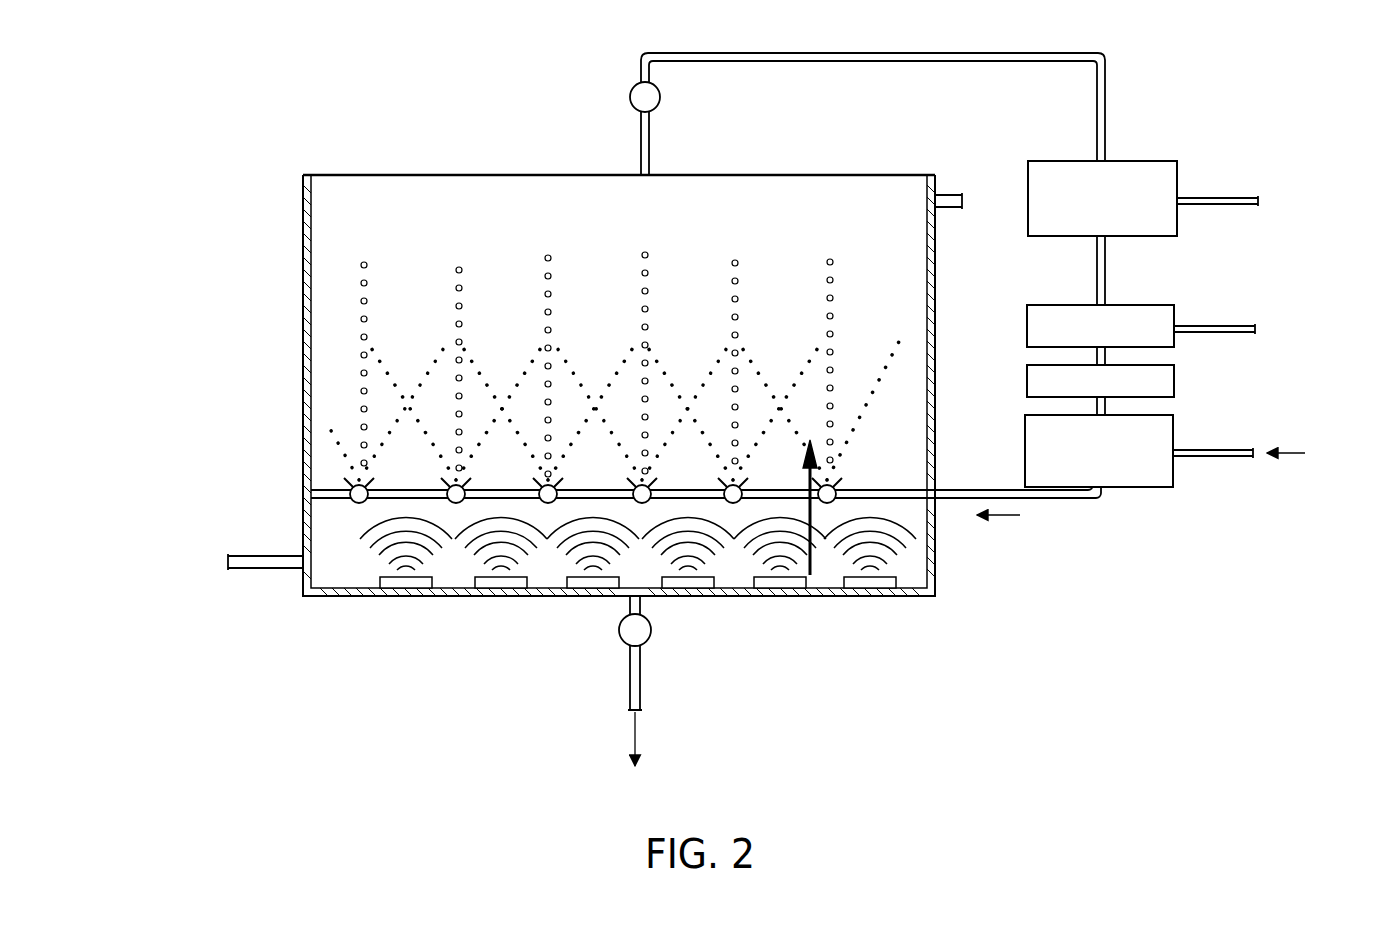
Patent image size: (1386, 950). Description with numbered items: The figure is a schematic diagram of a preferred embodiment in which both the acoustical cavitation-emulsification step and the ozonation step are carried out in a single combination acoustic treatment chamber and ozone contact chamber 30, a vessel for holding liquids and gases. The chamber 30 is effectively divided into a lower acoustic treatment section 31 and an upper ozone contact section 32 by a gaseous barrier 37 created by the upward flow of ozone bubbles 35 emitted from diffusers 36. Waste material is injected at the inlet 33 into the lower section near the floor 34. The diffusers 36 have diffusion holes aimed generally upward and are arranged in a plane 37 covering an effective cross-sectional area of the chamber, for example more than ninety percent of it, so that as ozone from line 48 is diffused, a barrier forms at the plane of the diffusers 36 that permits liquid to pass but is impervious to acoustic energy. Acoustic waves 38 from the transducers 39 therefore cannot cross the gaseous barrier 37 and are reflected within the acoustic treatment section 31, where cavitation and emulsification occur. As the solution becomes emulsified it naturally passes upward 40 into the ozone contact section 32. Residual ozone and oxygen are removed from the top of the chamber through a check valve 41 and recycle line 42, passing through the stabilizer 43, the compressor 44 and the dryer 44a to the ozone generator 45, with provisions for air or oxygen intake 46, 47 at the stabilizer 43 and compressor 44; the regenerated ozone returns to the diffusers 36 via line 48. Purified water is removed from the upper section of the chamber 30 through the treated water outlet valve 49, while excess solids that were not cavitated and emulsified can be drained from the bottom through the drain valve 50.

The combination acoustic treatment chamber and ozone contact chamber 30 is at (340, 168).
The acoustic treatment section 31 is at (546, 639).
The ozone contact section 32 is at (530, 301).
The inlet 33 is at (208, 561).
The floor 34 is at (530, 597).
The ozone bubbles 35 is at (530, 366).
The diffusers 36 is at (552, 486).
The gaseous barrier 37 is at (345, 503).
The acoustic waves 38 is at (390, 548).
The transducers 39 is at (735, 572).
The upward flow of liquid 40 is at (818, 470).
The check valve 41 is at (660, 95).
The recycle line 42 is at (873, 101).
The stabilizer 43 is at (1180, 145).
The compressor 44 is at (1160, 305).
The dryer 44a is at (1176, 380).
The ozone generator 45 is at (1175, 415).
The air or oxygen intake 46 is at (1305, 201).
The air or oxygen intake 47 is at (1303, 329).
The ozone input line 48 is at (993, 490).
The treated water outlet valve 49 is at (994, 200).
The drain valve 50 is at (625, 648).